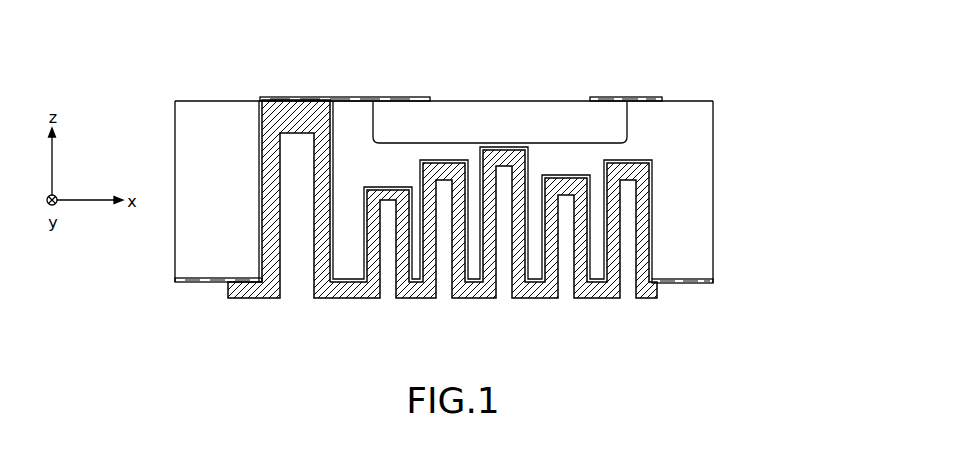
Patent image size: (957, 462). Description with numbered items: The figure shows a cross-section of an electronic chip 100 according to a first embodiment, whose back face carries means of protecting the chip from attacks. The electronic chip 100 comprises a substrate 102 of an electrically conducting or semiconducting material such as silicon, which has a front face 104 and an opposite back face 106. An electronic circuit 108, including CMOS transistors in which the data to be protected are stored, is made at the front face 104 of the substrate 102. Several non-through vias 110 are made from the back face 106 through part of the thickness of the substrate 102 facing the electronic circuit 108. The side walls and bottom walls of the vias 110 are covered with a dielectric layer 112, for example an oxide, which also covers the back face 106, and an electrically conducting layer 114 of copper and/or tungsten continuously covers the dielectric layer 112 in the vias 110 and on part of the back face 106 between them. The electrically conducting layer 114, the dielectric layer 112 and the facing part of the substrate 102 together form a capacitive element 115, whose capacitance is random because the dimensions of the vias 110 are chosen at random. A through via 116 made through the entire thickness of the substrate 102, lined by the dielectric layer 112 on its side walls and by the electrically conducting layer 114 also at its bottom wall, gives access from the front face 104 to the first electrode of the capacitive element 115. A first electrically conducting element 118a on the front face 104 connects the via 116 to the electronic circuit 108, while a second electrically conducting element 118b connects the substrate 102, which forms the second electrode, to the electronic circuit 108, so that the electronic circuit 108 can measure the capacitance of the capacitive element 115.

The electronic chip 100 is at (757, 98).
The substrate 102 is at (695, 217).
The front face 104 is at (684, 98).
The back face 106 is at (202, 291).
The electronic circuit 108 is at (546, 133).
The non-through vias 110 is at (387, 296).
The dielectric layer 112 is at (683, 284).
The electrically conducting layer 114 is at (333, 299).
The capacitive element 115 is at (688, 257).
The through via 116 is at (292, 290).
The first electrically conducting element 118a is at (363, 97).
The second electrically conducting element 118b is at (628, 97).